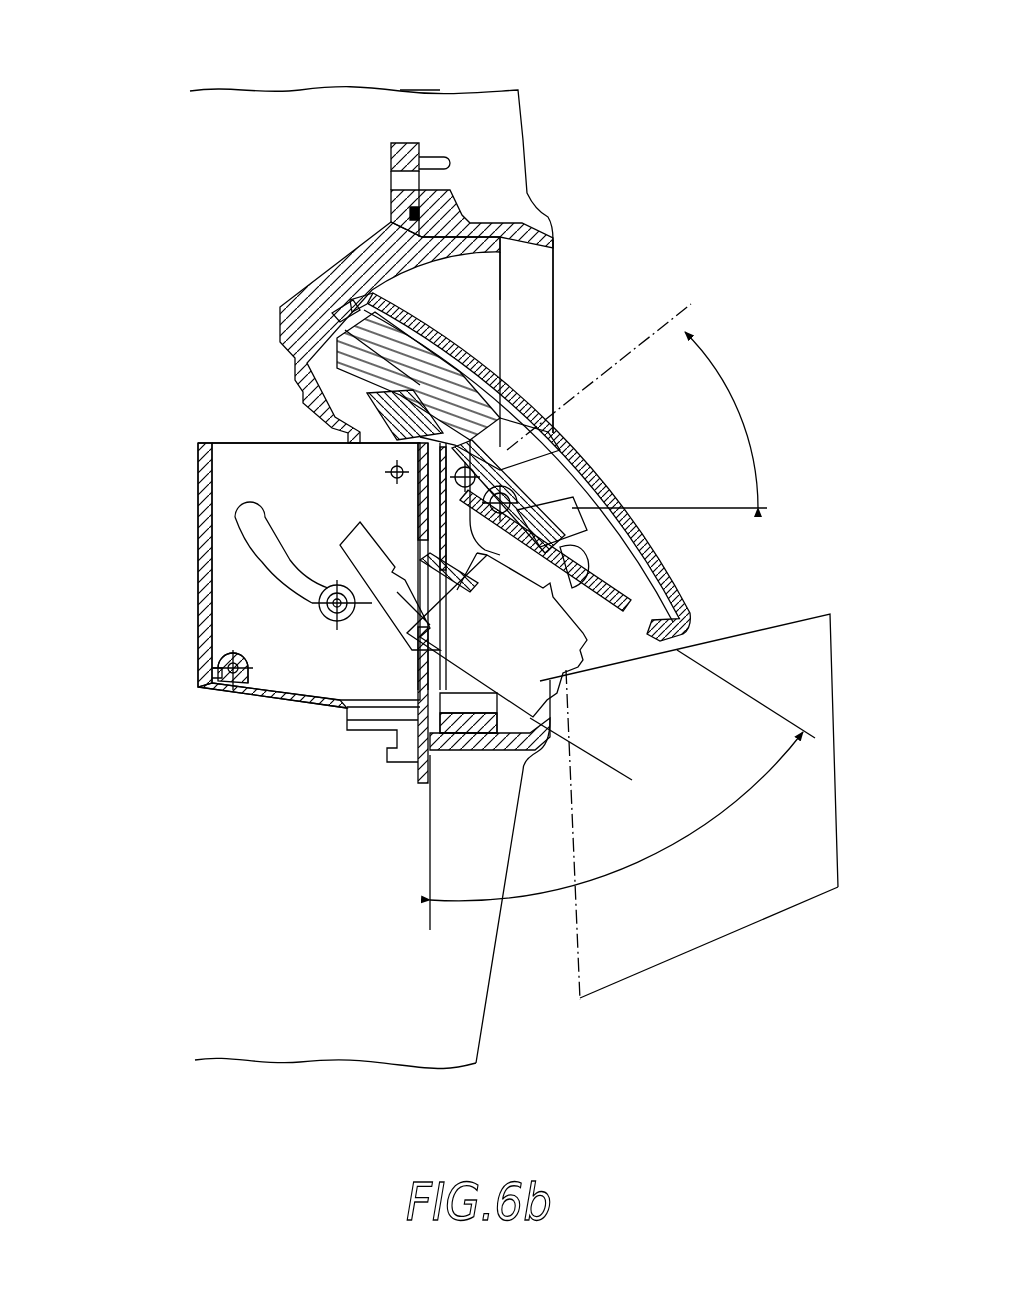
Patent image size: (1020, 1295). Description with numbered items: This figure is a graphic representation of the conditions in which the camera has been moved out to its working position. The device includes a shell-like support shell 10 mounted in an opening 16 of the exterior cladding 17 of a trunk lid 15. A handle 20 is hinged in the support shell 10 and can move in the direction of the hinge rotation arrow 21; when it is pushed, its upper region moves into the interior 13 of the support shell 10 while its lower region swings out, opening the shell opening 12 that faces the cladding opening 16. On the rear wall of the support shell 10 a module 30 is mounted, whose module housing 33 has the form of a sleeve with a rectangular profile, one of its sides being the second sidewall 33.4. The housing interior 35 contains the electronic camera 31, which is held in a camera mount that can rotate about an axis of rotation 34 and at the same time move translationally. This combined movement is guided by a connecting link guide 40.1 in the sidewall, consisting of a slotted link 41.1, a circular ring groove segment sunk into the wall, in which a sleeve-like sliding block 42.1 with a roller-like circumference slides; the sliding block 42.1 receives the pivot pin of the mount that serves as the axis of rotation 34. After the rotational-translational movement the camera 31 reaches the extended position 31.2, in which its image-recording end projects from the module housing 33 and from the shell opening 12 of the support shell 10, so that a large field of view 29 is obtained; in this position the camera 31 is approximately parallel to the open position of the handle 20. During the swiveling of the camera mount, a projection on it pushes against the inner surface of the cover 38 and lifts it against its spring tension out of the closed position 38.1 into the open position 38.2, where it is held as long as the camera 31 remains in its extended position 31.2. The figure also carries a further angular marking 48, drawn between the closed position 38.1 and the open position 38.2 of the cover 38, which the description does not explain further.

The trunk lid 15 is at (404, 87).
The exterior cladding 17 is at (524, 140).
The support shell 10 is at (332, 273).
The interior of the support shell 13 is at (446, 296).
The shell opening 12 is at (490, 288).
The opening of the exterior cladding 16 is at (528, 348).
The handle 20 is at (420, 373).
The hinge rotation arrow 21 is at (738, 402).
The module 30 is at (193, 440).
The second sidewall 33.4 is at (260, 470).
The housing interior 35 is at (324, 501).
The module housing 33 is at (197, 697).
The connecting link guide 40.1 is at (122, 592).
The slotted link 41.1 is at (253, 537).
The sliding block 42.1 is at (293, 590).
The axis of rotation 34 is at (330, 620).
The electronic camera 31 is at (510, 639).
The cover 38 is at (608, 595).
The open position of the cover 38.2 is at (690, 657).
The extended position of the camera 31.2 is at (628, 772).
The closed position of the cover 38.1 is at (428, 845).
The angle 48 is at (632, 867).
The field of view 29 is at (836, 887).